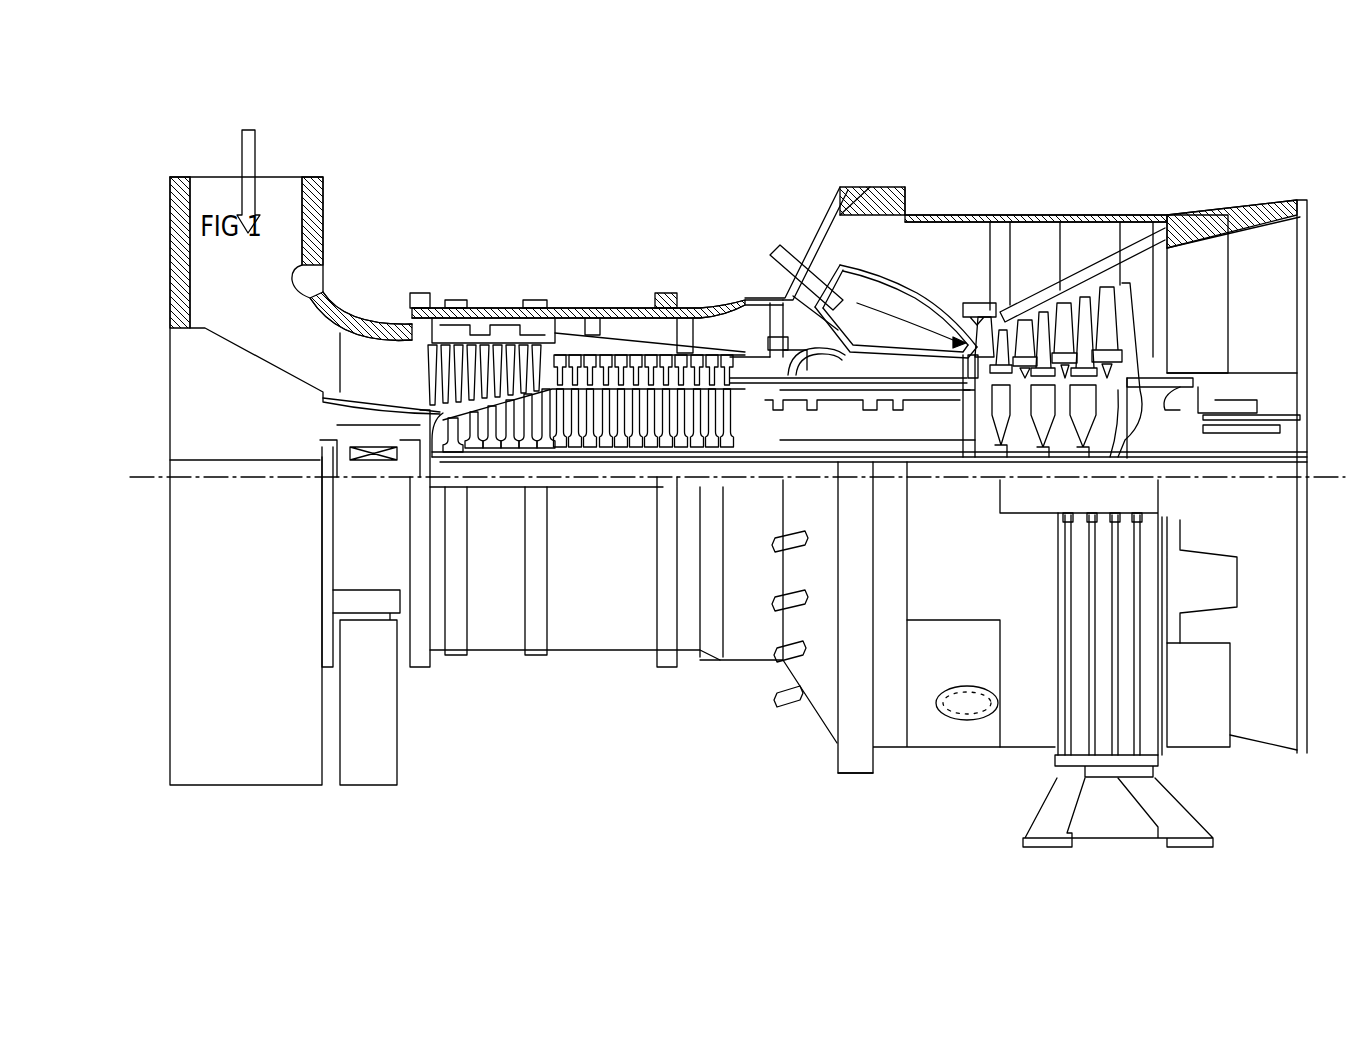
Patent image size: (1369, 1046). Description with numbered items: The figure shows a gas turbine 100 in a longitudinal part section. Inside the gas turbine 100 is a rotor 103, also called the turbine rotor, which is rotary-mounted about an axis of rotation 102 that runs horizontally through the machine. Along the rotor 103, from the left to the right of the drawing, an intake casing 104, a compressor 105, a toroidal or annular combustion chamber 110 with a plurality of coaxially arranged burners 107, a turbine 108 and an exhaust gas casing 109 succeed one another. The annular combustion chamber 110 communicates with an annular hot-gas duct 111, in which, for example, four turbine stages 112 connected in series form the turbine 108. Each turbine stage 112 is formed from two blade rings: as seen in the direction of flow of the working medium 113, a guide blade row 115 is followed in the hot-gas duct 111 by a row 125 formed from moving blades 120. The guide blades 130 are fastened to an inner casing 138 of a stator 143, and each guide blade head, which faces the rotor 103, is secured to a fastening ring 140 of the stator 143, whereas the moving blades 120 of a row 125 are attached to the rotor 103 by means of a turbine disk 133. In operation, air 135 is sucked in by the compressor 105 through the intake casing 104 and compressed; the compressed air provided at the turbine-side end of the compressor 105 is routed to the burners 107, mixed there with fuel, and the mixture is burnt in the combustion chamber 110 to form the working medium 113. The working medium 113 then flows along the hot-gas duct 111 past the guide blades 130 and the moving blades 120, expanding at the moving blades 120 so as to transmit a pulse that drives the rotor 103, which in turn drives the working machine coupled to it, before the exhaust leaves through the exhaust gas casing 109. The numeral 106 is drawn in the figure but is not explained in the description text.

The gas turbine 100 is at (604, 176).
The axis of rotation 102 is at (135, 476).
The rotor 103 is at (850, 450).
The intake casing 104 is at (313, 218).
The compressor 105 is at (504, 288).
The burner chamber wall 106 is at (937, 303).
The burners 107 is at (770, 262).
The turbine 108 is at (978, 175).
The exhaust gas casing 109 is at (1212, 215).
The combustion chamber 110 is at (830, 280).
The hot-gas duct 111 is at (1143, 288).
The turbine stage 112 is at (1120, 175).
The working medium 113 is at (877, 310).
The guide blade row 115 is at (1075, 215).
The moving blades 120 is at (1063, 343).
The row of moving blades 125 is at (1148, 215).
The guide blades 130 is at (1085, 320).
The turbine disk 133 is at (1118, 440).
The air 135 is at (257, 154).
The inner casing 138 is at (1015, 215).
The fastening ring 140 is at (975, 320).
The stator 143 is at (937, 214).